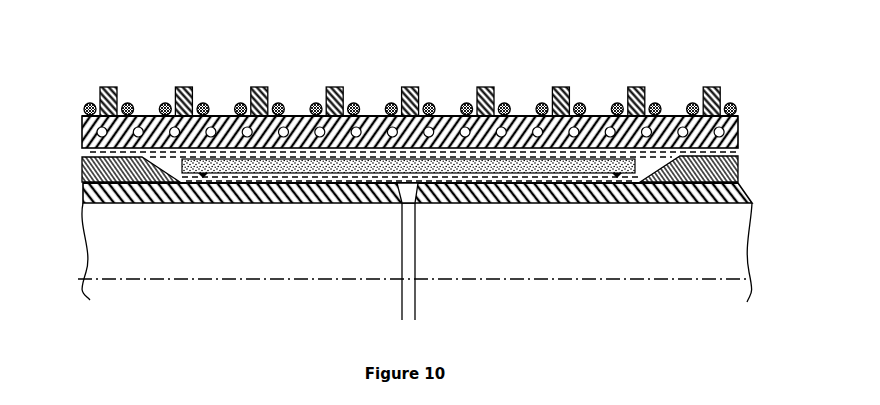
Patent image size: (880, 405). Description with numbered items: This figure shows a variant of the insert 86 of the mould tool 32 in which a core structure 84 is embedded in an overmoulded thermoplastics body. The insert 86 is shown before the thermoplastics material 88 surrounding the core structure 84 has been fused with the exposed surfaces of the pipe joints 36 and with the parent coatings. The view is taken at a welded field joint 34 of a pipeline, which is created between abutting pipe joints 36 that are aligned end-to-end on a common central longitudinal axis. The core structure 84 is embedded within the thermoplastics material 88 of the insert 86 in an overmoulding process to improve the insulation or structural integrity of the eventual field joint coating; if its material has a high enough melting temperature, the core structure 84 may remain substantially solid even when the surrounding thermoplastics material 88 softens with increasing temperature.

The mould tool 32 is at (74, 103).
The field joint 34 is at (383, 272).
The pipe joint 36 is at (200, 249).
The core structure 84 is at (508, 160).
The insert 86 is at (651, 151).
The thermoplastics material 88 is at (167, 162).